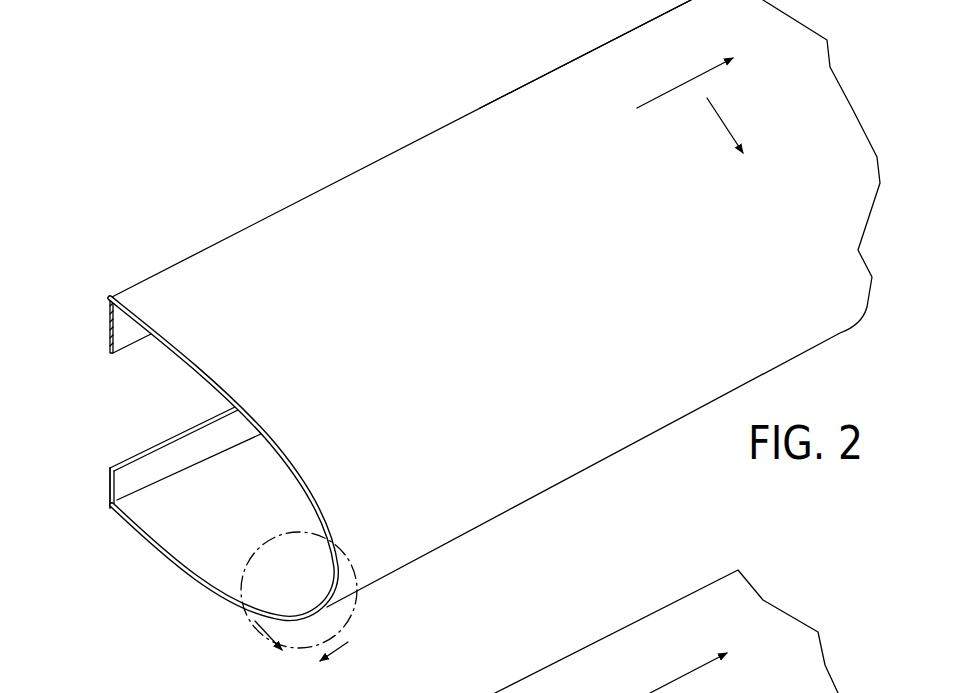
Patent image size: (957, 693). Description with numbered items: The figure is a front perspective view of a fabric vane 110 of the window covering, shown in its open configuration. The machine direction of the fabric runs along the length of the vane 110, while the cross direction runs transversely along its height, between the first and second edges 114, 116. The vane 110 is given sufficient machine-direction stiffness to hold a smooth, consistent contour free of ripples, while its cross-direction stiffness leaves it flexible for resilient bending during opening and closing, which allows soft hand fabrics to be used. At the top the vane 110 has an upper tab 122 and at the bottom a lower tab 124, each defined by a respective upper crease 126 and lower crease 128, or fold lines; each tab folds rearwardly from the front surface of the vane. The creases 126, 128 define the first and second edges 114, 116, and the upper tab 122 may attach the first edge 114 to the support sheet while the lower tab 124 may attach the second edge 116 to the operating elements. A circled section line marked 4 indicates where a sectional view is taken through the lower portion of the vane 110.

The vane 110 is at (258, 142).
The first edge 114 is at (110, 297).
The second edge 116 is at (111, 507).
The upper tab 122 is at (128, 323).
The lower tab 124 is at (134, 467).
The upper crease 126 is at (573, 59).
The lower crease 128 is at (180, 477).
The section line 4- 4 is at (299, 609).